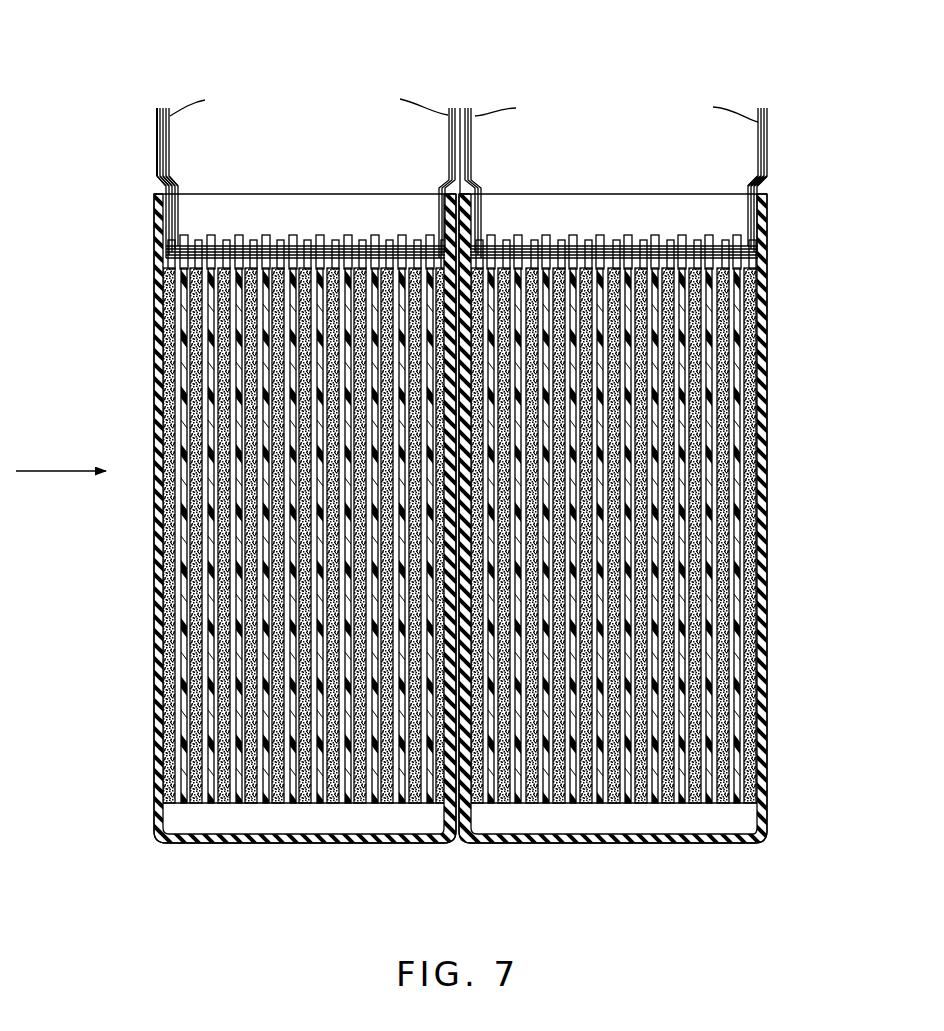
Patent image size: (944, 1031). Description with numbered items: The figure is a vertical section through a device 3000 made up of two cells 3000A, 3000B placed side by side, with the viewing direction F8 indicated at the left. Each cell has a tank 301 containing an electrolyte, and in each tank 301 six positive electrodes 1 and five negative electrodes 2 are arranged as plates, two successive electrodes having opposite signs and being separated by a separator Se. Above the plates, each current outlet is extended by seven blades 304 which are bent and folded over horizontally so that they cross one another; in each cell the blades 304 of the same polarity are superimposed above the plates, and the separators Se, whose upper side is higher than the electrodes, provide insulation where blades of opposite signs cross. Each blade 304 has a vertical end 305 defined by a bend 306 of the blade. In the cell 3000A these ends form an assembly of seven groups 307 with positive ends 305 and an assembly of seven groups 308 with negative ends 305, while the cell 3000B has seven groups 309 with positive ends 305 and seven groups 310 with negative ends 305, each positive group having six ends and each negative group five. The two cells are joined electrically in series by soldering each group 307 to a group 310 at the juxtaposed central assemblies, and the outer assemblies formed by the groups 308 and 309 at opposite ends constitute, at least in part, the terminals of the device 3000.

The positive electrodes 1 is at (178, 388).
The negative electrodes 2 is at (178, 574).
The tank 301 is at (758, 688).
The blades 304 is at (280, 228).
The vertical end 305 is at (461, 183).
The bend 306 is at (165, 168).
The groups with positive ends 307 is at (467, 136).
The groups with negative ends 308 is at (760, 170).
The groups with positive ends 309 is at (147, 140).
The groups with negative ends 310 is at (441, 133).
The device 3000 is at (458, 488).
The cell 3000A is at (778, 143).
The cell 3000B is at (142, 262).
The separator Se is at (730, 737).
The viewing direction of FIG. 8 F8 is at (61, 453).